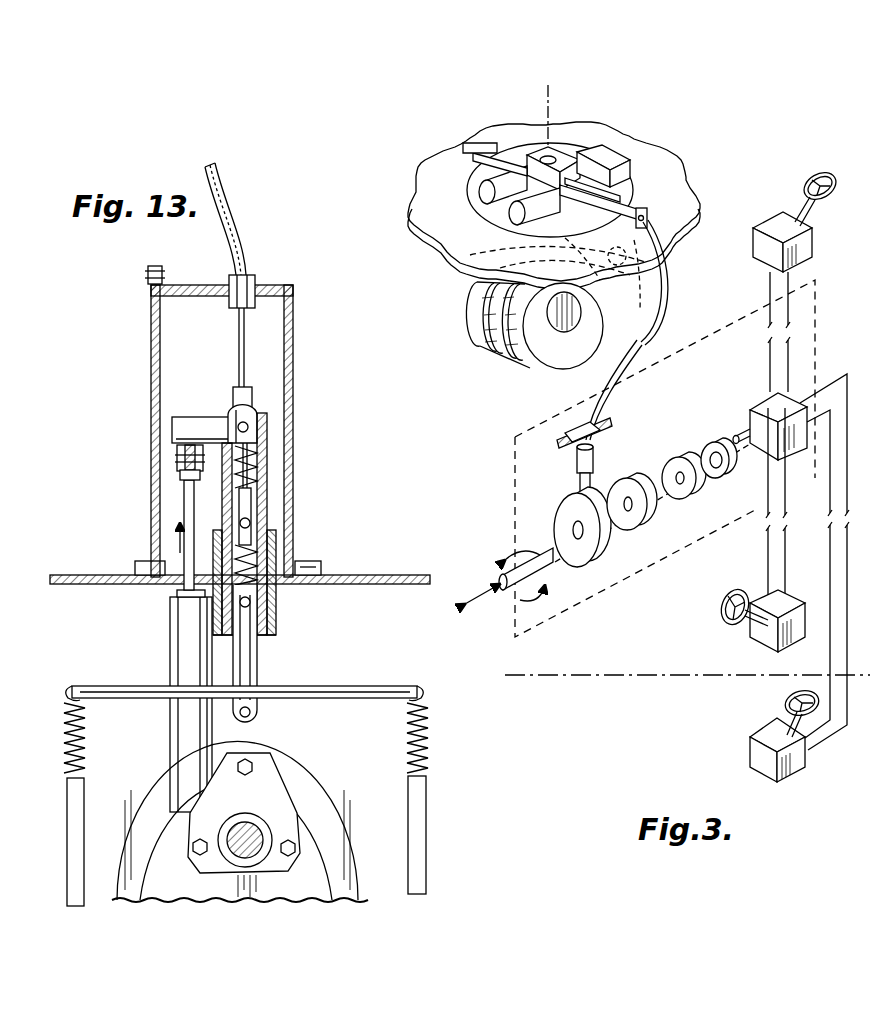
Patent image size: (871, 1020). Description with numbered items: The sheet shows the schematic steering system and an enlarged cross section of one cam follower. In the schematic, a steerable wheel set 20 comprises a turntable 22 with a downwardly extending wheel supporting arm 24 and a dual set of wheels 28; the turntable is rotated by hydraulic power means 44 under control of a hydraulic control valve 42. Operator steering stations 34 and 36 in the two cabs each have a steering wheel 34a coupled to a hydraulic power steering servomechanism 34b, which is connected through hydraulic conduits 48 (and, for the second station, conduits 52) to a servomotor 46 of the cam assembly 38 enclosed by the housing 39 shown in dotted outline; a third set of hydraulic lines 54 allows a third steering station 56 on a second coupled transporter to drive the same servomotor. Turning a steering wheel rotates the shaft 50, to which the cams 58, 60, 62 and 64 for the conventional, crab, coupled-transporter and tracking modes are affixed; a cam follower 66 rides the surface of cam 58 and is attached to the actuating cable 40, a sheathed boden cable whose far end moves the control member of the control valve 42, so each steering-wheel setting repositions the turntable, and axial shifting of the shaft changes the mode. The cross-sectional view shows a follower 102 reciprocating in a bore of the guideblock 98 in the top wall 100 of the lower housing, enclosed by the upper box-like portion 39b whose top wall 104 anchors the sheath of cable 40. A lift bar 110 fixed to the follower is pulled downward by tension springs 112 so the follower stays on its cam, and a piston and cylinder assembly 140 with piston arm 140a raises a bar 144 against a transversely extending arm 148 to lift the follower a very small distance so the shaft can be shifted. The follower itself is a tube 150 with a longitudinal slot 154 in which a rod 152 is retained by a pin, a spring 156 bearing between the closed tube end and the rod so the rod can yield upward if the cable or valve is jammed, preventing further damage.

In FIG. 3, the wheel set 20 is at (465, 290).
In FIG. 3, the turntable 22 is at (520, 215).
In FIG. 3, the wheel supporting arm 24 is at (602, 280).
In FIG. 3, the dual set of wheels 28 is at (508, 355).
In FIG. 3, the steering station 34 is at (760, 216).
In FIG. 3, the steering wheel 34a is at (812, 174).
In FIG. 3, the hydraulic power steering servomechanism 34b is at (812, 243).
In FIG. 3, the steering station 36 is at (760, 640).
In FIG. 13, the cam assembly 38 is at (372, 828).
In FIG. 3, the cam assembly 38 is at (558, 472).
In FIG. 3, the housing 39 is at (514, 506).
In FIG. 13, the upper box-like portion of the housing 39b is at (294, 366).
In FIG. 13, the actuating cable 40 is at (235, 196).
In FIG. 3, the actuating cable 40 is at (665, 288).
In FIG. 3, the hydraulic control valve 42 is at (630, 195).
In FIG. 3, the hydraulic power means 44 is at (575, 155).
In FIG. 3, the servomotor 46 is at (795, 398).
In FIG. 3, the hydraulic conduits 48 is at (789, 296).
In FIG. 13, the shaft 50 is at (258, 836).
In FIG. 3, the shaft 50 is at (548, 566).
In FIG. 3, the hydraulic conduits 52 is at (768, 550).
In FIG. 3, the hydraulic lines 54 is at (830, 653).
In FIG. 3, the third steering station 56 is at (748, 757).
In FIG. 3, the cam 58 is at (600, 553).
In FIG. 3, the second cam 60 is at (648, 520).
In FIG. 3, the cam 62 is at (680, 457).
In FIG. 3, the cam 64 is at (716, 442).
In FIG. 3, the cam follower 66 is at (595, 455).
In FIG. 13, the guideblock 98 is at (278, 546).
In FIG. 13, the top wall 100 is at (355, 575).
In FIG. 13, the cam follower 102 is at (272, 486).
In FIG. 13, the top wall 104 is at (265, 296).
In FIG. 13, the lift bar 110 is at (362, 686).
In FIG. 13, the springs 112 is at (85, 754).
In FIG. 13, the fluid actuated piston and cylinder assembly 140 is at (170, 662).
In FIG. 13, the piston arm 140a is at (184, 505).
In FIG. 13, the bar 144 is at (177, 458).
In FIG. 13, the transversely extending arm 148 is at (195, 417).
In FIG. 13, the tube 150 is at (262, 464).
In FIG. 13, the rod 152 is at (258, 658).
In FIG. 13, the slot 154 is at (262, 526).
In FIG. 13, the spring 156 is at (260, 457).